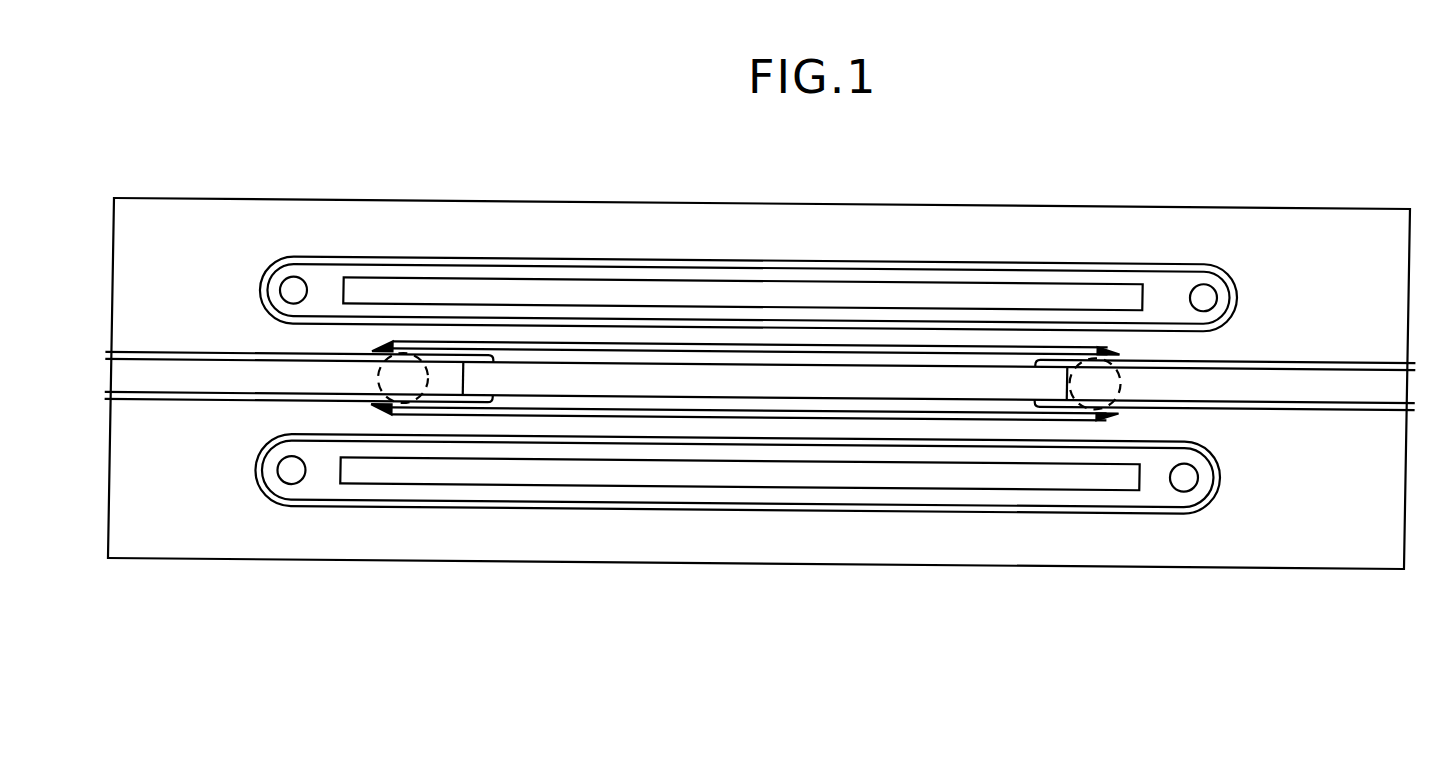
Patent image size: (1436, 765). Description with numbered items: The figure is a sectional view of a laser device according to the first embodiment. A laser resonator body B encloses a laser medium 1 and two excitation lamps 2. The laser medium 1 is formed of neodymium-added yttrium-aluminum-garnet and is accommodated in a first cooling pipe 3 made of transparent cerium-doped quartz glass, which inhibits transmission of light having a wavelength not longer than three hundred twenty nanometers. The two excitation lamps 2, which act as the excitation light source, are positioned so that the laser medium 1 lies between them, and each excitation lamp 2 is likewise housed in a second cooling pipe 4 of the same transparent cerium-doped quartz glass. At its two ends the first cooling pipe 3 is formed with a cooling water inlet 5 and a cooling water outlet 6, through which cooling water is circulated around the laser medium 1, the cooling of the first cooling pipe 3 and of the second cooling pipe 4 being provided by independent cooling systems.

The laser medium 1 is at (835, 376).
The excitation lamps 2 is at (754, 281).
The first cooling pipe 3 is at (868, 342).
The second cooling pipe 4 is at (641, 252).
The cooling water inlet 5 is at (1121, 374).
The cooling water outlet 6 is at (294, 288).
The laser resonator body B is at (968, 194).